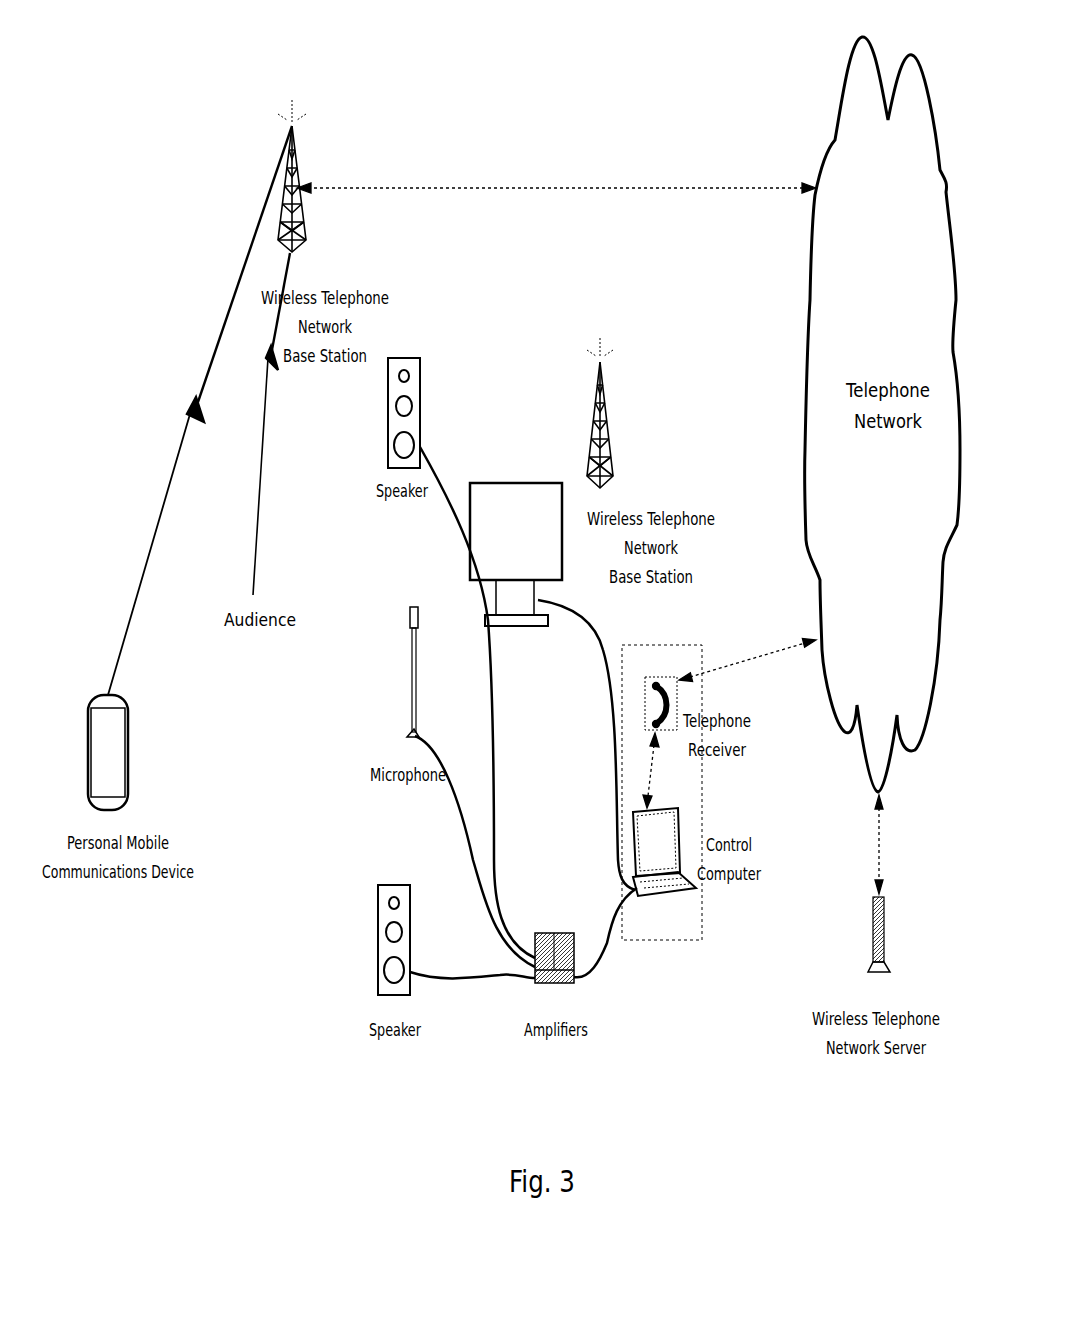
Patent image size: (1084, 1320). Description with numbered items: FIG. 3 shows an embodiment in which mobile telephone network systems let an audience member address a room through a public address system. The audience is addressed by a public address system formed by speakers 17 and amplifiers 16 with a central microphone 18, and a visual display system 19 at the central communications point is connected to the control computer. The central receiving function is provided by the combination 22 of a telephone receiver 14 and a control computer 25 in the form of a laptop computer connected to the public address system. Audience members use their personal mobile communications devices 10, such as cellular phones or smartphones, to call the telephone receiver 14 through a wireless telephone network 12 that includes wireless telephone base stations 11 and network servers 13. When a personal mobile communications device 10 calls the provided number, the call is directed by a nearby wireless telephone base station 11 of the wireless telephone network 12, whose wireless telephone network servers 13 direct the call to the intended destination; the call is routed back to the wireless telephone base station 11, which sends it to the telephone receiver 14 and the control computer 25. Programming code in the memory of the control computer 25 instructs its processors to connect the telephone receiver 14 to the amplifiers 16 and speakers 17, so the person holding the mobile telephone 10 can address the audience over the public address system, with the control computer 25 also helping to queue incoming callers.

The personal mobile communications device 10 is at (128, 756).
The wireless telephone base station 11 is at (306, 238).
The wireless telephone network 12 is at (887, 658).
The wireless telephone network server 13 is at (886, 914).
The telephone receiver 14 is at (660, 676).
The amplifiers 16 is at (568, 933).
The speakers 17 is at (386, 410).
The central microphone 18 is at (410, 622).
The visual display system 19 is at (510, 483).
The combination 22 is at (643, 944).
The control computer 25 is at (676, 897).